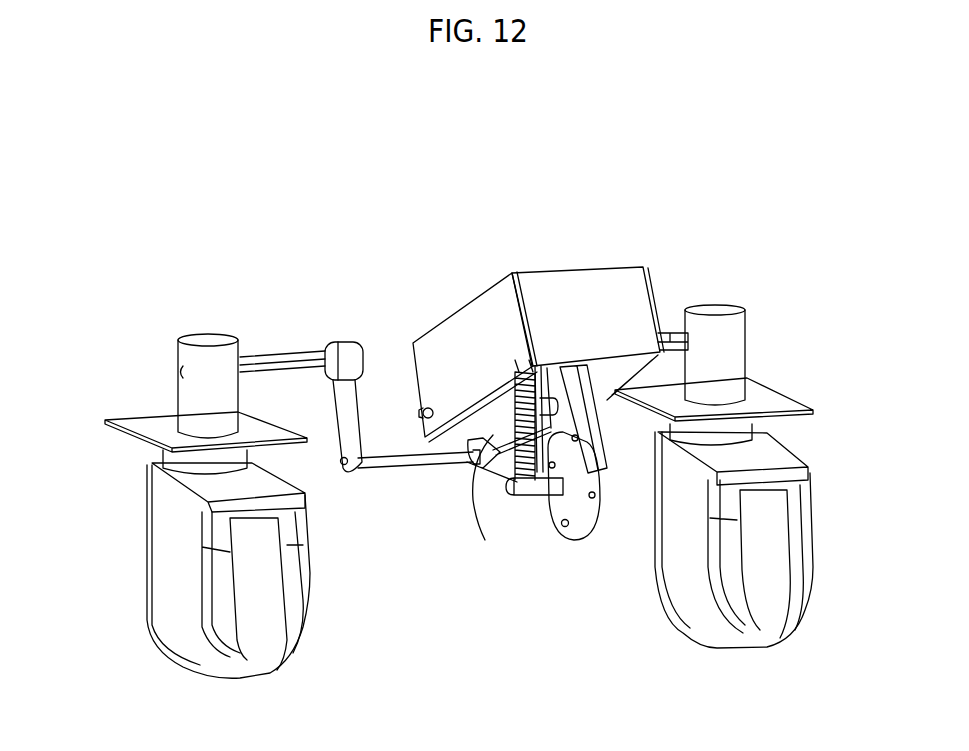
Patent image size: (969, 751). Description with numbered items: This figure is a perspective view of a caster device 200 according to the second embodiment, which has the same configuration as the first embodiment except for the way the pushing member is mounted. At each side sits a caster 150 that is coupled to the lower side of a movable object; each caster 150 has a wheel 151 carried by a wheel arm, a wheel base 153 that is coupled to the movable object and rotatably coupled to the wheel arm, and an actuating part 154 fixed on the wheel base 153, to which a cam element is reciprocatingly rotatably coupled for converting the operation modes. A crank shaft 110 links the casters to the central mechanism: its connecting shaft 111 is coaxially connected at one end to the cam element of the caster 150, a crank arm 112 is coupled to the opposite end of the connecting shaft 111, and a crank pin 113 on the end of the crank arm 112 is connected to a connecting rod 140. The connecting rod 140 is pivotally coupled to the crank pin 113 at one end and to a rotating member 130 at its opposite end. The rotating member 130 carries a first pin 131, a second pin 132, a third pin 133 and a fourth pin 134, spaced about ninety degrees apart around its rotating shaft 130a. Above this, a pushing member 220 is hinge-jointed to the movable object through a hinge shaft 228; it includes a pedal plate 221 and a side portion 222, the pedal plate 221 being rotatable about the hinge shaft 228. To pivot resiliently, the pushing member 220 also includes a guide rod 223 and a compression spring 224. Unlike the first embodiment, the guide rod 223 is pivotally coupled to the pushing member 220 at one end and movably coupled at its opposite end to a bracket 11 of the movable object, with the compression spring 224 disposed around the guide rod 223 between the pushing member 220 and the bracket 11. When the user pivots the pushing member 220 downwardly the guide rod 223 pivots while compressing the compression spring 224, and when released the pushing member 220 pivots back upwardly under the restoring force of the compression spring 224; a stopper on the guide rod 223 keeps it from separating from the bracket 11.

The caster device 200 is at (300, 205).
The caster 150 is at (133, 547).
The wheel 151 is at (258, 660).
The wheel base 153 is at (138, 422).
The actuating part 154 is at (213, 338).
The crank shaft 110 is at (343, 340).
The connecting shaft 111 is at (285, 365).
The crank arm 112 is at (340, 423).
The crank pin 113 is at (375, 468).
The hinge shaft 228 is at (423, 410).
The pushing member 220 is at (678, 168).
The pedal plate 221 is at (592, 282).
The housing side face 222 is at (605, 362).
The fourth pin 134 is at (540, 365).
The first pin 131 is at (562, 355).
The second pin 132 is at (600, 495).
The rotating member 130 is at (583, 523).
The rotating shaft 130a is at (510, 490).
The third pin 133 is at (563, 528).
The bracket 11 is at (524, 496).
The connecting rod 140 is at (470, 463).
The compression spring 224 is at (490, 458).
The guide rod 223 is at (492, 472).